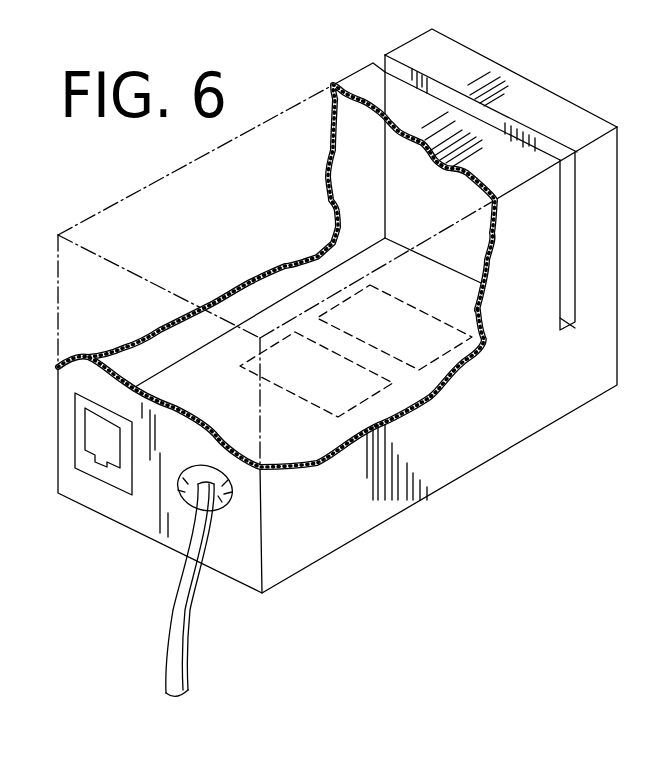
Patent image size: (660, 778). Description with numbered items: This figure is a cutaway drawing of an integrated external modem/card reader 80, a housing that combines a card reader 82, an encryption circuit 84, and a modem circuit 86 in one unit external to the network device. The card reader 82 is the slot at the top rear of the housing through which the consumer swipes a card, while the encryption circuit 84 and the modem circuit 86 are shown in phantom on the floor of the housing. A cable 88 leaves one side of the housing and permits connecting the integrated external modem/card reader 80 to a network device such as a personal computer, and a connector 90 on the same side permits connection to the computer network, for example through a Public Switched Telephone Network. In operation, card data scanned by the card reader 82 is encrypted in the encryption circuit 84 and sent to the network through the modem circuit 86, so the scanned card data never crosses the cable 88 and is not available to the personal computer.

The integrated external modem/card reader 80 is at (617, 293).
The card reader 82 is at (500, 123).
The encryption circuit 84 is at (406, 337).
The modem circuit 86 is at (331, 389).
The cable 88 is at (190, 603).
The connector 90 is at (106, 438).